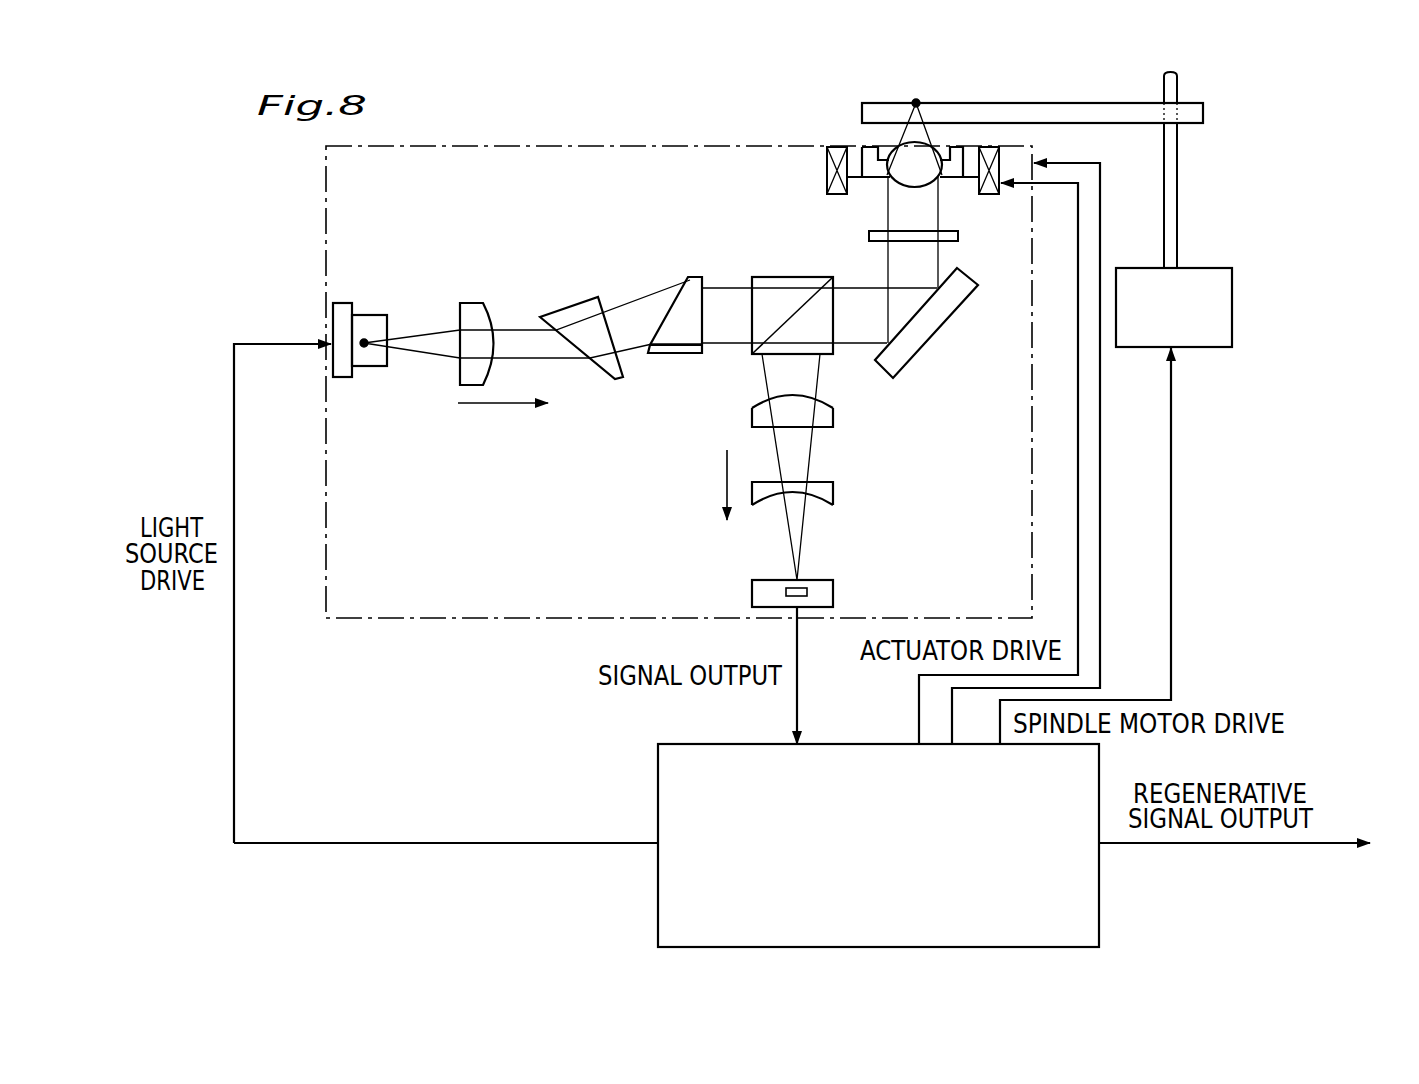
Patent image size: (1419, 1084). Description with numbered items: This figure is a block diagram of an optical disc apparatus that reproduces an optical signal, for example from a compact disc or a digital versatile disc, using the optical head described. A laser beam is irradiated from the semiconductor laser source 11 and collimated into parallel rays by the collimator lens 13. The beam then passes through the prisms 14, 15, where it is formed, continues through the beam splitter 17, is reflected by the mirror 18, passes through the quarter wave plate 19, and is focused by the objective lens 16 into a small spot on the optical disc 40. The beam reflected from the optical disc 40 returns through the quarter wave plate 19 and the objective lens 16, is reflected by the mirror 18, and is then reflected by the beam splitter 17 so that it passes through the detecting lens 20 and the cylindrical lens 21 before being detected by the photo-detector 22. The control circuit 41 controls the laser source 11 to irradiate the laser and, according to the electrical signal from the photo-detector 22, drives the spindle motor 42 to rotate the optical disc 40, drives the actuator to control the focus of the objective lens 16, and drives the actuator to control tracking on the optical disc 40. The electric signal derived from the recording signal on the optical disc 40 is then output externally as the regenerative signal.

The semiconductor laser source 11 is at (365, 338).
The collimator lens 13 is at (474, 302).
The prism 14 is at (582, 296).
The prism 15 is at (697, 275).
The objective lens 16 is at (875, 150).
The beam splitter 17 is at (792, 277).
The mirror 18 is at (932, 338).
The quarter wave plate 19 is at (958, 236).
The detecting lens 20 is at (833, 418).
The cylindrical lens 21 is at (833, 495).
The photo-detector 22 is at (833, 593).
The optical disc 40 is at (1137, 113).
The control circuit 41 is at (1099, 903).
The spindle motor 42 is at (1210, 268).